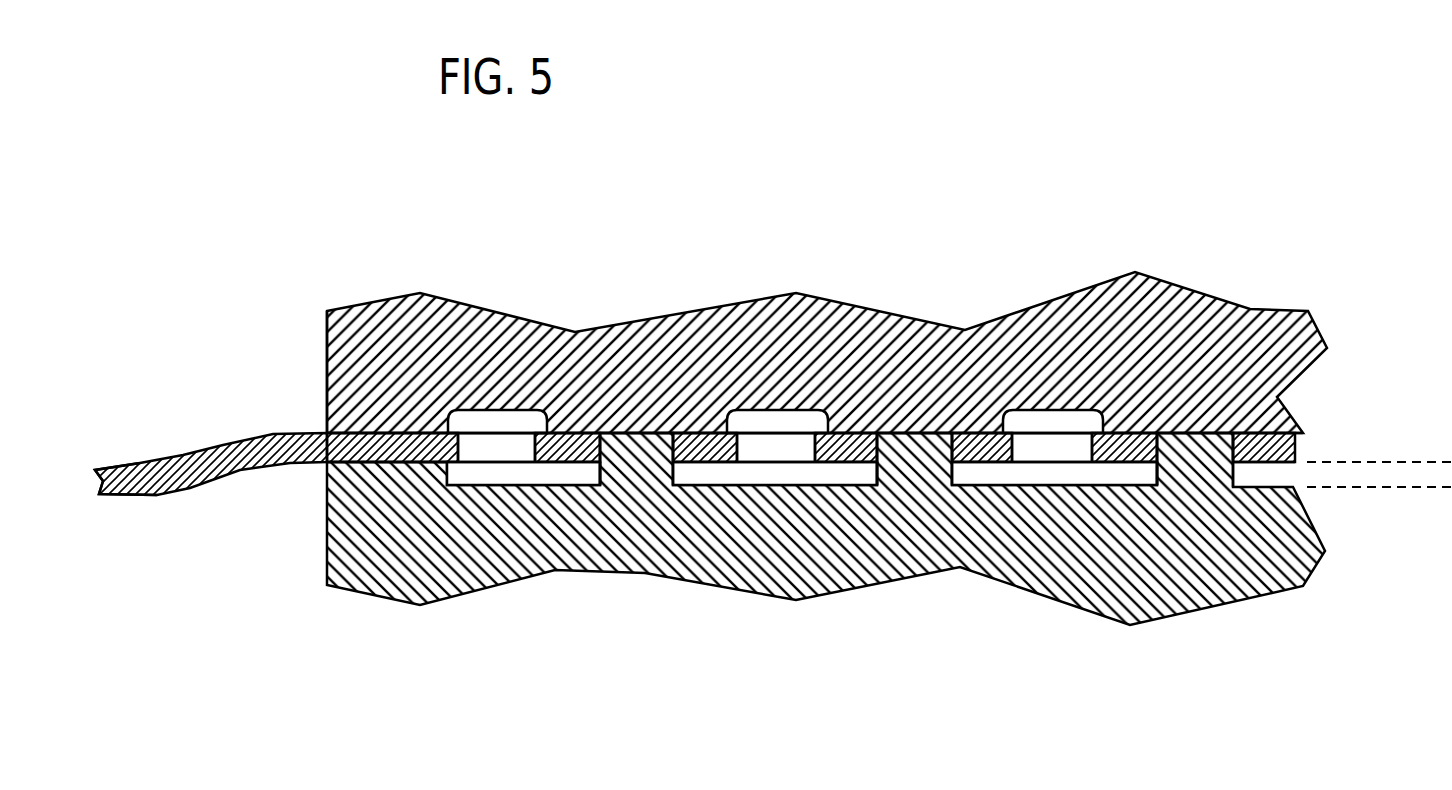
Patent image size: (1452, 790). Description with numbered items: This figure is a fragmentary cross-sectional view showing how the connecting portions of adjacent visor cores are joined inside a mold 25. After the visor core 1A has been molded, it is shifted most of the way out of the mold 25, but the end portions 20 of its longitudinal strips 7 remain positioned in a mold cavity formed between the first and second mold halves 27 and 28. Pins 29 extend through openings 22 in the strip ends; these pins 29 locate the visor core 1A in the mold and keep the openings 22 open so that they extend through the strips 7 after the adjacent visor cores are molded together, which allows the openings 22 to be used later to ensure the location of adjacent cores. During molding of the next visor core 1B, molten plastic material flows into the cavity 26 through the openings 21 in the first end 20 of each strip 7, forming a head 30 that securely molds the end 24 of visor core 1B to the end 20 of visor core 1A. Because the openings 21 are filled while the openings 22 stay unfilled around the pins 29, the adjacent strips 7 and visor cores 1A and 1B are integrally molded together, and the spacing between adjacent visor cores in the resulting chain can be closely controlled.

The visor core 1A is at (223, 437).
The visor core 1B is at (508, 473).
The longitudinal strip 7 is at (180, 492).
The first end 20 is at (317, 463).
The openings 21 is at (461, 445).
The openings 22 is at (590, 472).
The second end 24 is at (460, 472).
The mold 25 is at (357, 307).
The cavity 26 is at (535, 413).
The first mold half 27 is at (345, 400).
The second mold half 28 is at (368, 575).
The pins 29 is at (645, 432).
The head 30 is at (475, 418).